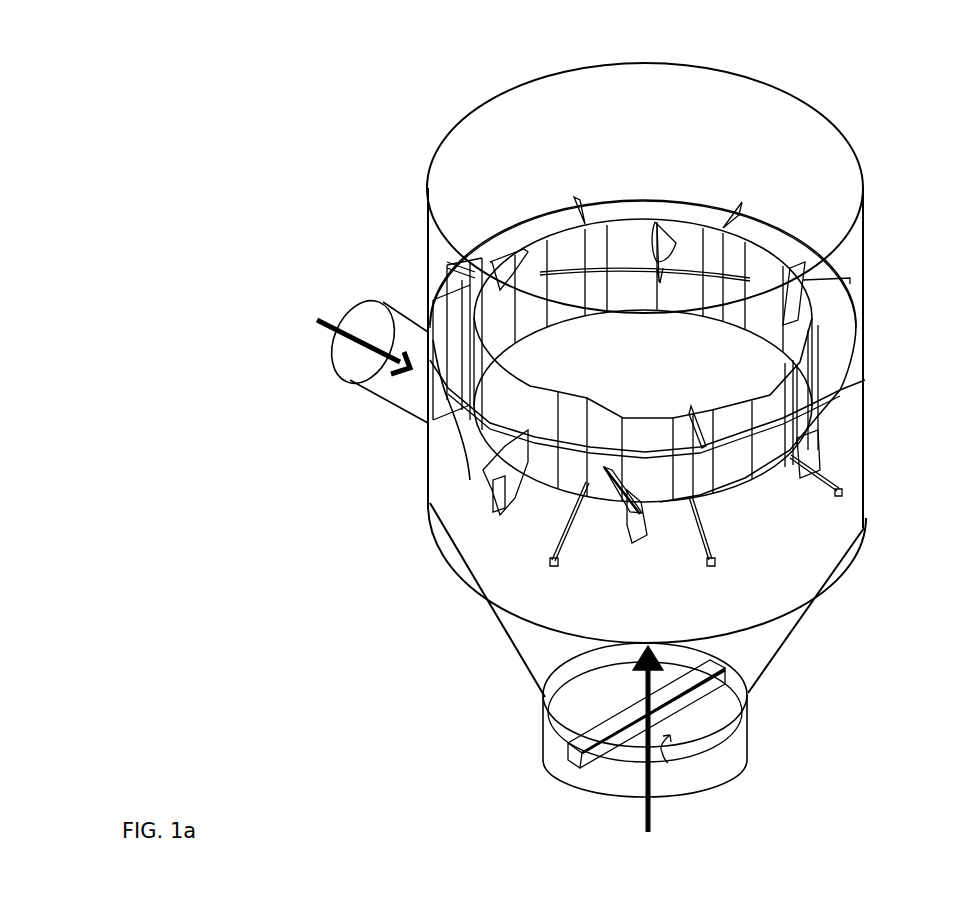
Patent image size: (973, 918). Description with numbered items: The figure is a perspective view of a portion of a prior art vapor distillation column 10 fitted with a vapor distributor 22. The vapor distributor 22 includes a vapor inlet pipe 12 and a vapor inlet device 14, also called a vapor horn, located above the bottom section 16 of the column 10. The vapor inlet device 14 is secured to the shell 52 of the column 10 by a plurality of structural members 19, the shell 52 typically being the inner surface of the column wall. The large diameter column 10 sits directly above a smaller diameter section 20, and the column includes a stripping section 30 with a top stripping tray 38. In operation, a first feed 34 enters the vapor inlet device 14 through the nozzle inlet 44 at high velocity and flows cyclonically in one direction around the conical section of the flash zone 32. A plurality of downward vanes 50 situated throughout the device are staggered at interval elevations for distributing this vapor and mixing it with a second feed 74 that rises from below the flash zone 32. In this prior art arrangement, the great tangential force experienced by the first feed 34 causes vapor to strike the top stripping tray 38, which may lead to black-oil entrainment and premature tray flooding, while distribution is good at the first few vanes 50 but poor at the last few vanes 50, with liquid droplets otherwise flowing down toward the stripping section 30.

The vapor distillation column 10 is at (428, 213).
The vapor inlet pipe 12 is at (428, 333).
The vapor inlet device 14 is at (848, 327).
The bottom section 16 is at (461, 645).
The structural members 19 is at (432, 492).
The smaller diameter section 20 is at (633, 677).
The vapor distributor 22 is at (893, 344).
The stripping section 30 is at (718, 723).
The flash zone 32 is at (657, 375).
The first feed 34 is at (354, 357).
The top stripping tray 38 is at (668, 763).
The nozzle inlet 44 is at (430, 408).
The downward vanes 50 is at (798, 493).
The shell 52 is at (458, 160).
The second feed 74 is at (662, 836).